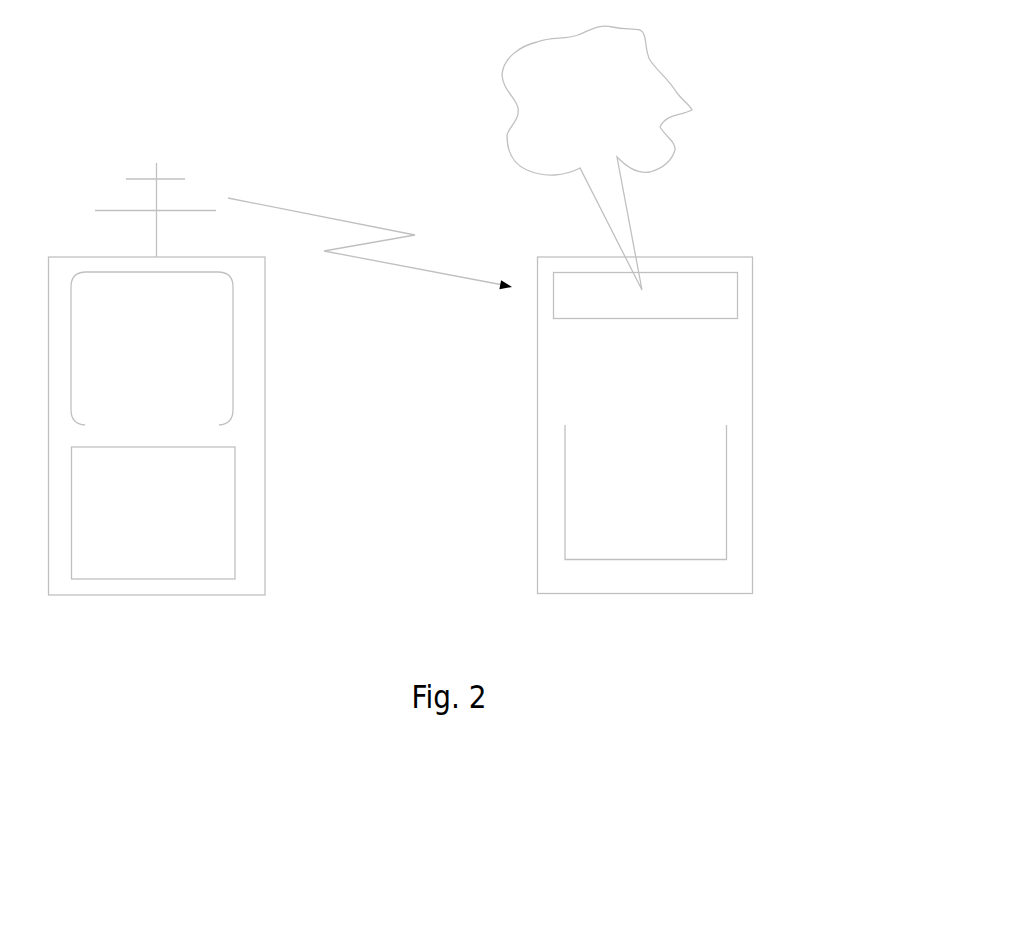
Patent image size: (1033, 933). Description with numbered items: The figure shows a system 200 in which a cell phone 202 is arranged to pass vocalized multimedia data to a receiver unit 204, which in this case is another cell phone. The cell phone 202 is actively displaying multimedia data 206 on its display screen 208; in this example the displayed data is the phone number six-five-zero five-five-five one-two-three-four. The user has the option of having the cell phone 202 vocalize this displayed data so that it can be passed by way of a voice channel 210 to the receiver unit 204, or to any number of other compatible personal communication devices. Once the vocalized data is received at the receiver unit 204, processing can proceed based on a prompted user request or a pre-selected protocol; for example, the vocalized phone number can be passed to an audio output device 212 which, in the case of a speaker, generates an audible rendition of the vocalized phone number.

The system 200 is at (192, 758).
The cell phone 202 is at (265, 424).
The receiver unit 204 is at (752, 424).
The multimedia data 206 is at (177, 325).
The display screen 208 is at (233, 352).
The voice channel 210 is at (327, 202).
The audio output device 212 is at (738, 293).